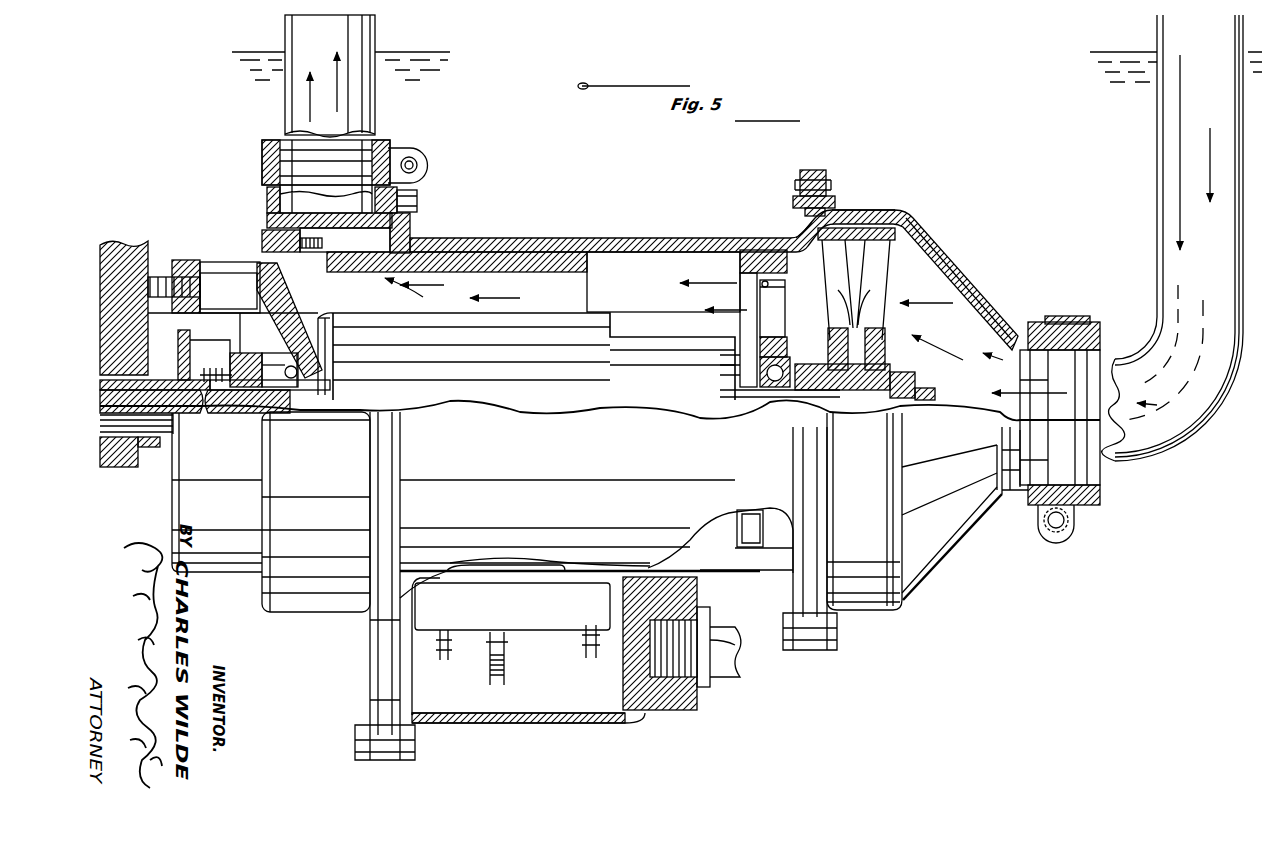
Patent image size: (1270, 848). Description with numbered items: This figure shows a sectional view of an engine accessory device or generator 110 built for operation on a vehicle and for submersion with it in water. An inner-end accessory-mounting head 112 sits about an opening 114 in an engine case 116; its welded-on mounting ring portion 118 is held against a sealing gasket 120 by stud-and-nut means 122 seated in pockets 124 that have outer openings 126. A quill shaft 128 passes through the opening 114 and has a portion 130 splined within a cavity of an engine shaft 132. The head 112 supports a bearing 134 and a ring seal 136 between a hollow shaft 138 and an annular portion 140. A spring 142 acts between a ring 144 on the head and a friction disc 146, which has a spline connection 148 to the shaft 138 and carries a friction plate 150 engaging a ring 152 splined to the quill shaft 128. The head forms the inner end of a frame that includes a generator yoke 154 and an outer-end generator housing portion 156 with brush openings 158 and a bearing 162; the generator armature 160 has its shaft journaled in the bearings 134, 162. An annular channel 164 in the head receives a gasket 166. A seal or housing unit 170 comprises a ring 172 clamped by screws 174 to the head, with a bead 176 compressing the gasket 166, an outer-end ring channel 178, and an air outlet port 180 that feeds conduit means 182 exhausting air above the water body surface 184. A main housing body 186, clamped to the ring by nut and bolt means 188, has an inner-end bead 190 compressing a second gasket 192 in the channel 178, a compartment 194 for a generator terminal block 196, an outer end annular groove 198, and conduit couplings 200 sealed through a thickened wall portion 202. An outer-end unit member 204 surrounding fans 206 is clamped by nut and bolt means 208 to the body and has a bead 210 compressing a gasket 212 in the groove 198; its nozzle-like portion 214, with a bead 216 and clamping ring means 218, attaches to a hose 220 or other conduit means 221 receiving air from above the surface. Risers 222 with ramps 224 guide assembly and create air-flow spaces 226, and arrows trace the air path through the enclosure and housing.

The engine accessory device or generator 110 is at (597, 314).
The inner-end accessory-mounting head 112 is at (275, 335).
The opening 114 is at (130, 436).
The engine case 116 is at (125, 240).
The welded-on mounting ring portion 118 is at (186, 262).
The sealing gasket 120 is at (178, 276).
The stud-and-nut means 122 is at (212, 296).
The pockets 124 is at (238, 282).
The outer openings 126 is at (214, 262).
The generator member or quill shaft 128 is at (165, 380).
The splined portion 130 is at (152, 430).
The engine shaft 132 is at (112, 468).
The bearing 134 is at (316, 395).
The ring seal 136 is at (250, 404).
The hollow shaft 138 is at (284, 406).
The annular portion 140 is at (275, 360).
The spring 142 is at (220, 372).
The ring 144 is at (240, 354).
The friction disc 146 is at (193, 340).
The spline connection 148 is at (206, 413).
The friction plate 150 is at (185, 326).
The ring 152 is at (178, 344).
The generator yoke 154 is at (478, 252).
The outer-end generator housing portion 156 is at (775, 526).
The brush openings 158 is at (635, 262).
The generator armature 160 is at (526, 356).
The bearing 162 is at (778, 404).
The annular channel 164 is at (285, 220).
The gasket 166 is at (300, 234).
The seal or housing unit 170 is at (812, 164).
The ring 172 is at (310, 628).
The screws 174 is at (300, 270).
The bead 176 is at (278, 238).
The outer-end ring channel 178 is at (378, 212).
The air outlet port 180 is at (382, 140).
The conduit means 182 is at (372, 98).
The water body surface 184 is at (393, 52).
The main or intermediate housing body 186 is at (565, 238).
The nut and bolt means 188 is at (418, 196).
The inner-end bead 190 is at (412, 220).
The second gasket 192 is at (410, 184).
The compartment 194 is at (522, 644).
The generator terminal block 196 is at (512, 606).
The outer end annular groove 198 is at (800, 236).
The fluid-proof generator-lead conduit couplings 200 is at (722, 672).
The thickened wall portion 202 is at (628, 680).
The outer-end unit member 204 is at (948, 272).
The fans 206 is at (827, 314).
The nut and bolt means 208 is at (832, 196).
The bead 210 is at (838, 216).
The gasket 212 is at (797, 214).
The nozzle-like portion 214 is at (947, 456).
The bead 216 is at (1078, 345).
The clamping ring means 218 is at (1042, 530).
The hose 220 is at (1102, 497).
The conduit means 221 is at (1172, 442).
The pilot-means or risers 222 is at (748, 262).
The leading sides or ramps 224 is at (785, 286).
The air-flow spaces 226 is at (758, 556).